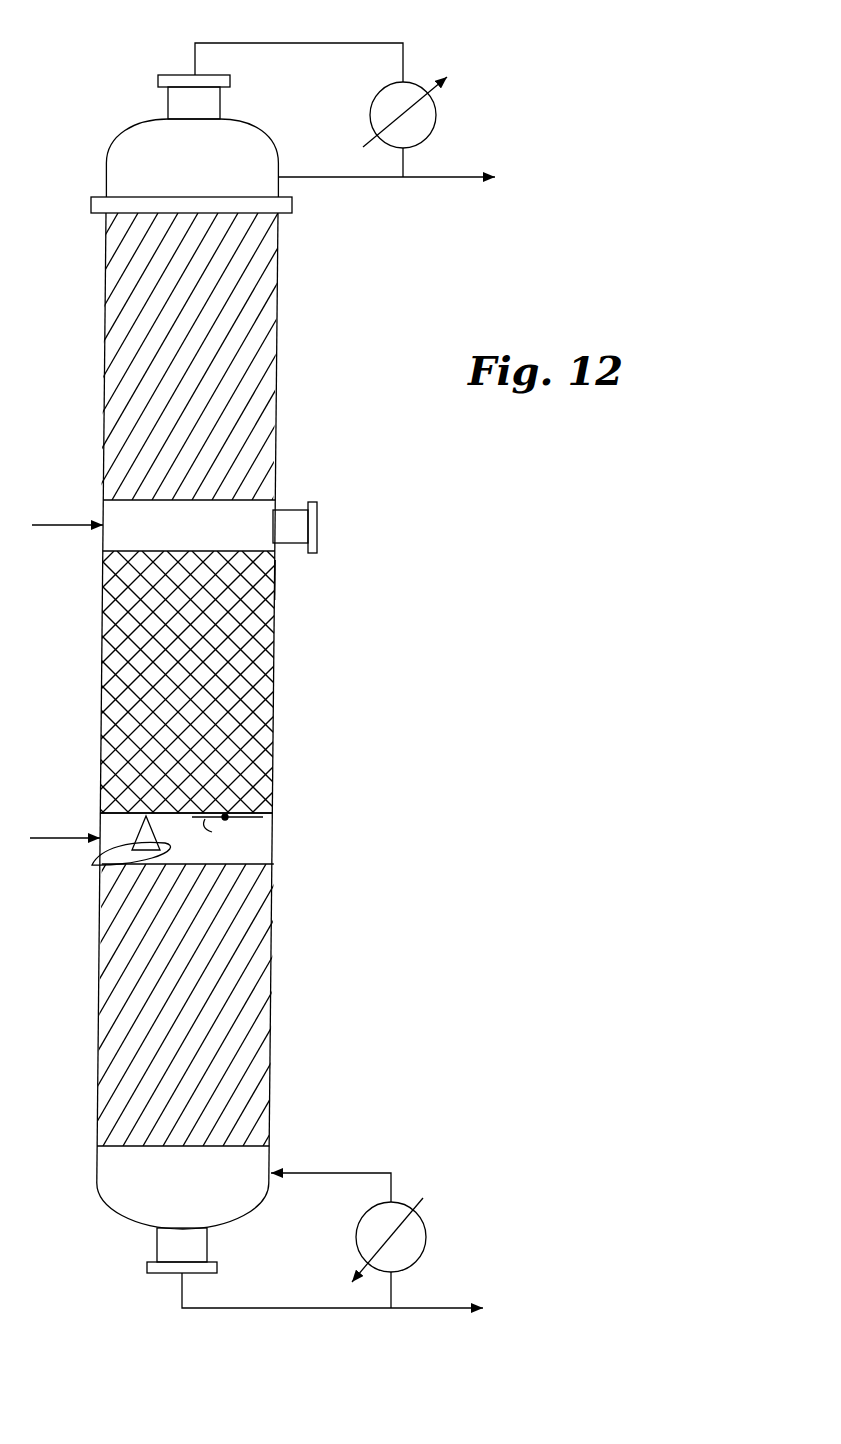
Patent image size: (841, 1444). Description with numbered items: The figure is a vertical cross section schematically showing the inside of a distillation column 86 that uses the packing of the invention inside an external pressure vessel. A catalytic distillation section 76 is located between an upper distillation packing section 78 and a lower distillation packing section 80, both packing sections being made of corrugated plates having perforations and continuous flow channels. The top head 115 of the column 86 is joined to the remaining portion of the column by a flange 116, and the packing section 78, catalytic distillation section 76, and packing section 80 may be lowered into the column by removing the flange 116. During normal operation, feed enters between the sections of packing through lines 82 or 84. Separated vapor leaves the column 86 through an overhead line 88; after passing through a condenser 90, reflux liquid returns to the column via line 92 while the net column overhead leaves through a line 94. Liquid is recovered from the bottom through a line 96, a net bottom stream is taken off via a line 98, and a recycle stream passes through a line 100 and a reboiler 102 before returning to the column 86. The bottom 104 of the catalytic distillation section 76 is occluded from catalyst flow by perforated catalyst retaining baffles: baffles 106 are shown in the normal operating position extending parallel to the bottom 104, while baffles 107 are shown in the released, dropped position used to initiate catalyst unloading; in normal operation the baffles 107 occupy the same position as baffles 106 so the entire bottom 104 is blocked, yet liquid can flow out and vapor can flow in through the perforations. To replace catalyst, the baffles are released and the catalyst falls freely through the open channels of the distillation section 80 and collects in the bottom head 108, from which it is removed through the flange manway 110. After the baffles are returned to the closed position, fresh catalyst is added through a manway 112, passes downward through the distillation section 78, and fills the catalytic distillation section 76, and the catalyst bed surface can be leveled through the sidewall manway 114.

The catalytic distillation section 76 is at (242, 645).
The upper distillation packing section 78 is at (250, 340).
The lower distillation packing section 80 is at (248, 1015).
The feed line 82 is at (70, 522).
The feed line 84 is at (60, 835).
The distillation column 86 is at (276, 580).
The overhead line 88 is at (322, 43).
The condenser 90 is at (436, 118).
The reflux line 92 is at (360, 178).
The net overhead line 94 is at (454, 178).
The bottom liquid line 96 is at (255, 1308).
The net bottom stream line 98 is at (440, 1310).
The recycle line 100 is at (392, 1283).
The reboiler 102 is at (425, 1237).
The bottom of catalytic distillation section 104 is at (272, 795).
The catalyst retaining baffles 106 is at (242, 820).
The catalyst retaining baffles 107 is at (92, 863).
The bottom head 108 is at (122, 1215).
The flange manway 110 is at (155, 1243).
The manway 112 is at (168, 104).
The sidewall manway 114 is at (296, 510).
The top head 115 is at (262, 135).
The flange 116 is at (291, 215).